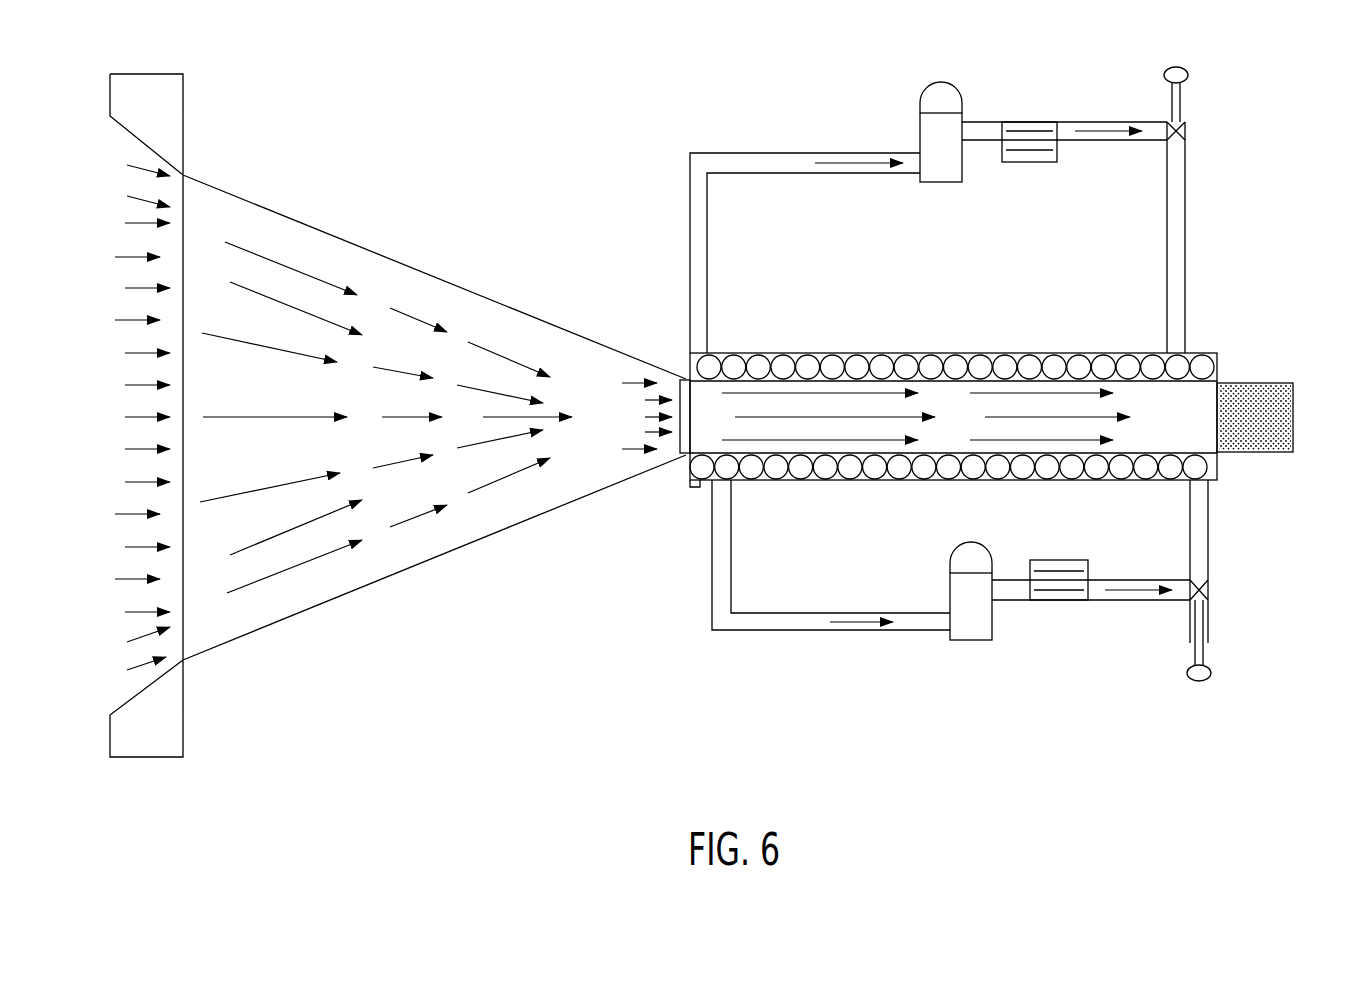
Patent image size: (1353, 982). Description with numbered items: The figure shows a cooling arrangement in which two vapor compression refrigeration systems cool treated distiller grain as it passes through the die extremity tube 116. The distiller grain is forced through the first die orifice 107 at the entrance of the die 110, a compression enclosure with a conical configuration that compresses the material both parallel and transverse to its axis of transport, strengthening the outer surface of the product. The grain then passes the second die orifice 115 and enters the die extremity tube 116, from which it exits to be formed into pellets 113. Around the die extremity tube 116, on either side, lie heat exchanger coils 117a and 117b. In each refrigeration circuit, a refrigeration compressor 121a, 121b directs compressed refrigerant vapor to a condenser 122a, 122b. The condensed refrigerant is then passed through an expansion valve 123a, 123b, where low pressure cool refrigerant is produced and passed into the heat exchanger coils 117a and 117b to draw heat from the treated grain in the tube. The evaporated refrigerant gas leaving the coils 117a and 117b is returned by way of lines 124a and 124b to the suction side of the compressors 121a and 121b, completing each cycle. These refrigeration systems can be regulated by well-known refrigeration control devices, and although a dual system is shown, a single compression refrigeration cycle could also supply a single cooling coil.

The first die orifice 107 is at (183, 697).
The die 110 is at (397, 568).
The pellets 113 is at (1255, 383).
The second die orifice 115 is at (683, 382).
The die extremity tube 116 is at (1150, 383).
The heat exchanger coil 117a is at (800, 365).
The heat exchanger coil 117b is at (748, 467).
The refrigeration compressor 121a is at (930, 86).
The refrigeration compressor 121b is at (975, 640).
The condenser 122a is at (1035, 122).
The condenser 122b is at (1058, 600).
The expansion valve 123a is at (1185, 130).
The expansion valve 123b is at (1208, 614).
The line 124a is at (778, 153).
The line 124b is at (778, 632).